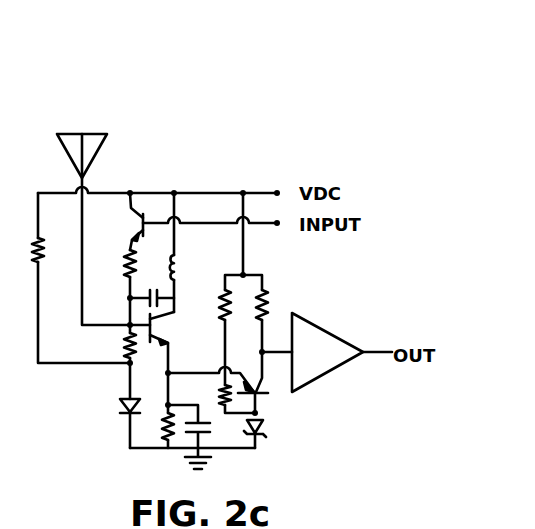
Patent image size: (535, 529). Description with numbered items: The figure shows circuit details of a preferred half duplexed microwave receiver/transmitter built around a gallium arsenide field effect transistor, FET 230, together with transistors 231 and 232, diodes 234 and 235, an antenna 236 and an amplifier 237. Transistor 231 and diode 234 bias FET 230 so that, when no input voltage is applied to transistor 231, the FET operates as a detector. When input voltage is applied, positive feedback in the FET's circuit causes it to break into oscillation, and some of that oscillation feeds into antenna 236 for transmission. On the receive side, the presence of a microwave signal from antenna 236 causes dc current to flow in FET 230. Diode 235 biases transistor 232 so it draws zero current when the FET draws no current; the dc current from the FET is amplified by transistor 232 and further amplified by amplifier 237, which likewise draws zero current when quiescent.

The gallium arsenide field effect transistor 230 is at (170, 328).
The transistor 231 is at (141, 226).
The transistor 232 is at (264, 396).
The diode 234 is at (118, 405).
The diode 235 is at (260, 438).
The antenna 236 is at (104, 140).
The amplifier 237 is at (322, 330).